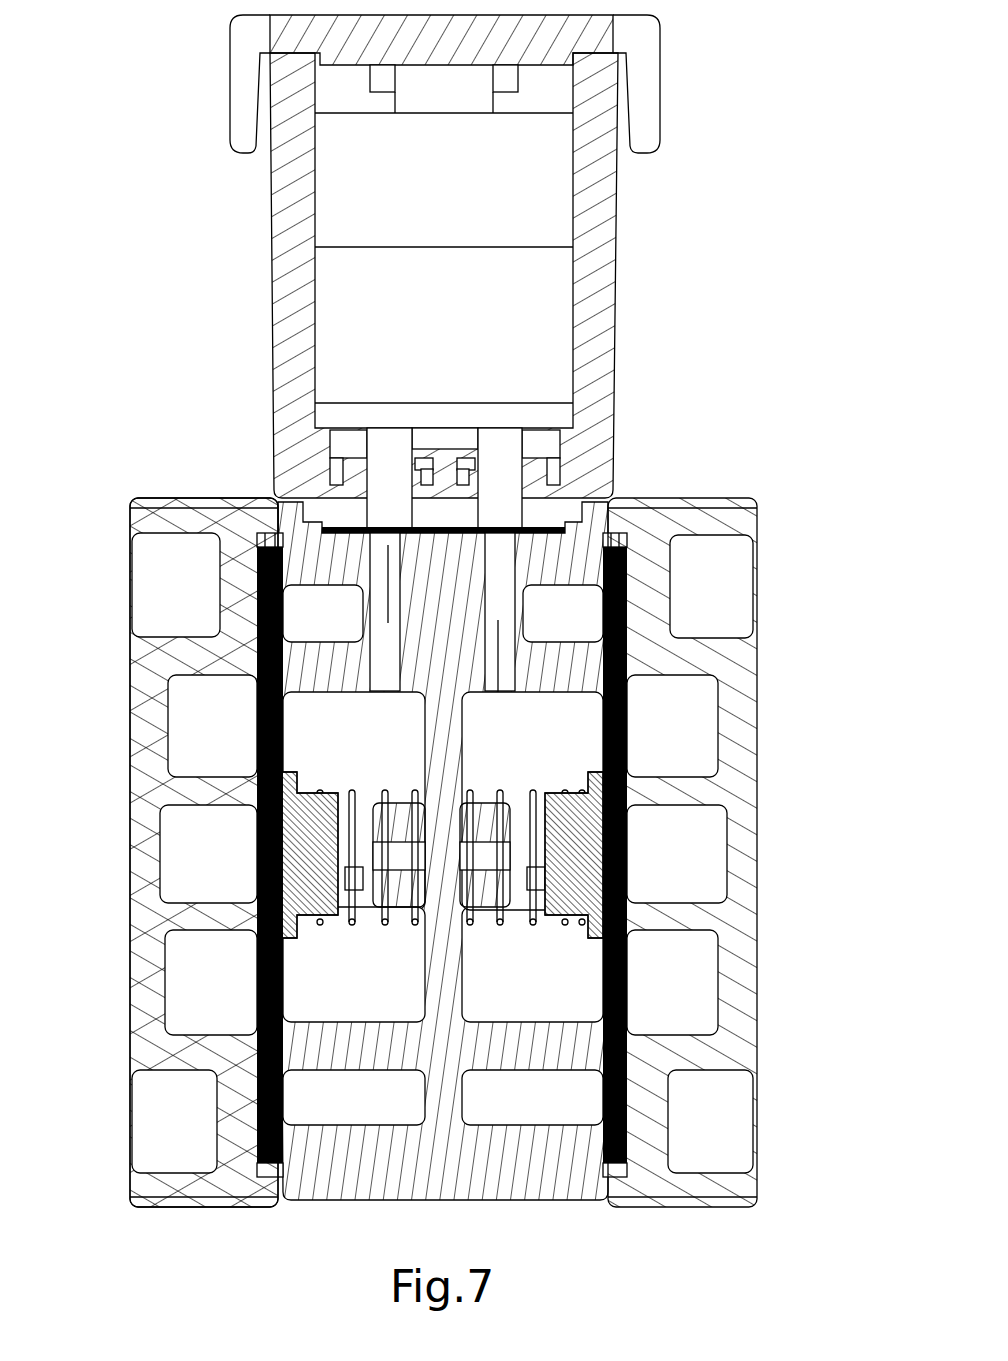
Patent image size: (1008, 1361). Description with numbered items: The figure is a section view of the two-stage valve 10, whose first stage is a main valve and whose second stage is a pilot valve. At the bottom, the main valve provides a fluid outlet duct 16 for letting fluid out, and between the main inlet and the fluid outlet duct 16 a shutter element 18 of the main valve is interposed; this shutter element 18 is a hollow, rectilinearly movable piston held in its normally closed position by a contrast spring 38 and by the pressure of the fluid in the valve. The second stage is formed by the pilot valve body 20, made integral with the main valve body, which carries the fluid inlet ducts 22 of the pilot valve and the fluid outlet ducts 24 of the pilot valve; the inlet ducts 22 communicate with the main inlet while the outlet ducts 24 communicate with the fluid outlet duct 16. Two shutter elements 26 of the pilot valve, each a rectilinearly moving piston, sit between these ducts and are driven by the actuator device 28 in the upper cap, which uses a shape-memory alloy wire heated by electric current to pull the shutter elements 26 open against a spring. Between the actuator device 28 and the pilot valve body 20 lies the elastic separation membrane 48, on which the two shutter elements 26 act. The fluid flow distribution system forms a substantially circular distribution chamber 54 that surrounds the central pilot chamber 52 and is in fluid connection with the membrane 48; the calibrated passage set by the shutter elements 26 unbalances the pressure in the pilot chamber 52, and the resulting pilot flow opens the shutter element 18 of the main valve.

The two-stage valve 10 is at (452, 611).
The fluid outlet duct of the main valve 16 is at (705, 833).
The shutter element of the main valve 18 is at (580, 903).
The pilot valve body 20 is at (132, 735).
The fluid inlet duct of the pilot valve 22 is at (497, 613).
The fluid outlet duct of the pilot valve 24 is at (390, 667).
The shutter element of the pilot valve 26 is at (390, 472).
The actuator device 28 is at (620, 218).
The contrast spring 38 is at (335, 920).
The elastic separation membrane 48 is at (453, 527).
The pilot chamber 52 is at (580, 729).
The distribution chamber 54 is at (333, 613).